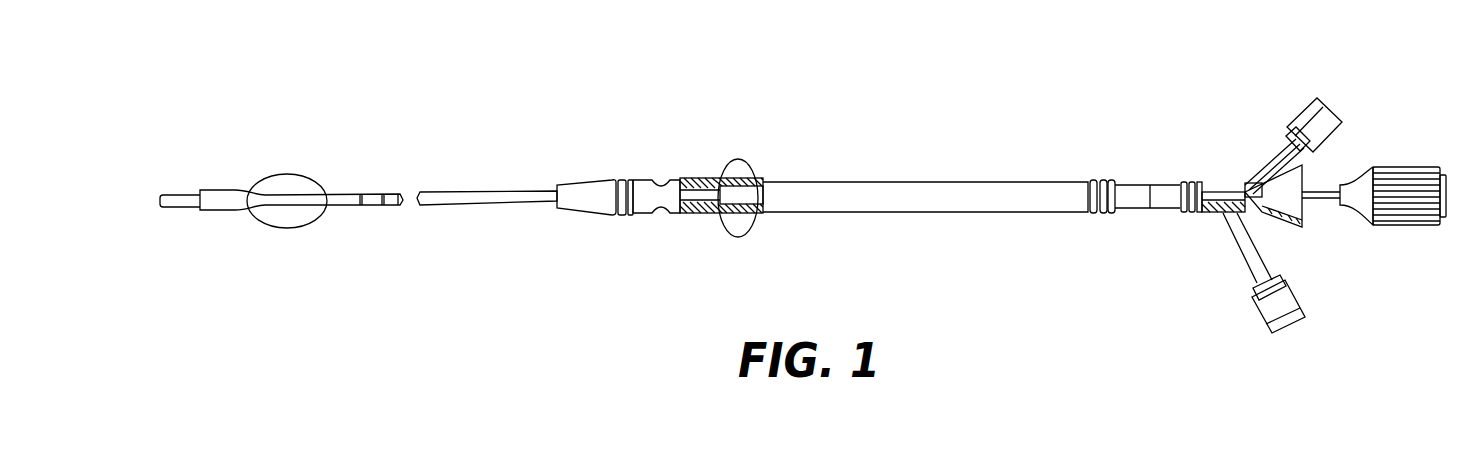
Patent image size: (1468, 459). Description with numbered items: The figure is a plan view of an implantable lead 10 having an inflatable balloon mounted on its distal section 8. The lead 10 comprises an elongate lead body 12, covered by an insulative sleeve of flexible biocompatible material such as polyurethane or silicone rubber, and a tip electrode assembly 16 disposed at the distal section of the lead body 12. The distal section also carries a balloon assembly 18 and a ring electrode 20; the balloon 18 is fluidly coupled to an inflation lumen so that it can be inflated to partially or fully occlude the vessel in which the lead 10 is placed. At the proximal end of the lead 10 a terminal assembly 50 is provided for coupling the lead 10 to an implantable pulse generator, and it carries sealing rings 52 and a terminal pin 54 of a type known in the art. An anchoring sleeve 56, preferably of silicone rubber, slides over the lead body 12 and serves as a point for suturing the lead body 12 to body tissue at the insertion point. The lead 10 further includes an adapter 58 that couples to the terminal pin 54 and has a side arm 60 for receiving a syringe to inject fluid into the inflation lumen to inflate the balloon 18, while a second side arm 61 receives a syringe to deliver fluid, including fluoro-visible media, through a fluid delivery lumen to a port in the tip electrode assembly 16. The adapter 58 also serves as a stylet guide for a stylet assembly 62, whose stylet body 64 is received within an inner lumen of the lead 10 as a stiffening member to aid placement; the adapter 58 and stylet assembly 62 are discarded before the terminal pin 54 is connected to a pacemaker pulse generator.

The lead 10 is at (636, 98).
The distal section 8 is at (222, 212).
The lead body 12 is at (455, 208).
The tip electrode assembly 16 is at (157, 203).
The balloon assembly 18 is at (292, 176).
The ring electrode 20 is at (373, 193).
The terminal assembly 50 is at (1151, 130).
The sealing rings 52 is at (1108, 213).
The terminal pin 54 is at (1222, 188).
The anchoring sleeve 56 is at (650, 200).
The adapter 58 is at (1313, 190).
The side arm 60 is at (1300, 300).
The side arm 61 is at (1300, 105).
The stylet assembly 62 is at (1400, 227).
The stylet body 64 is at (1343, 187).